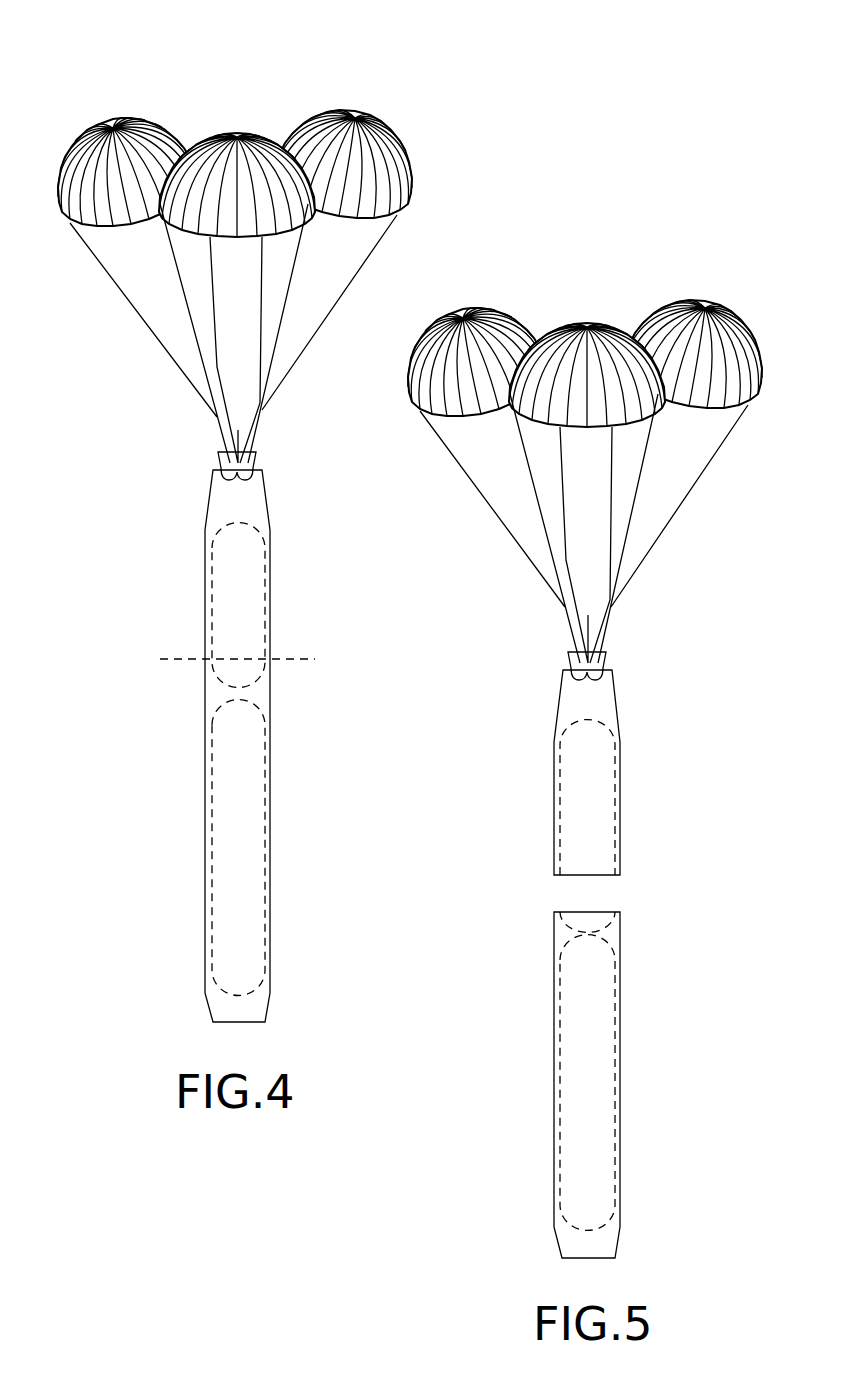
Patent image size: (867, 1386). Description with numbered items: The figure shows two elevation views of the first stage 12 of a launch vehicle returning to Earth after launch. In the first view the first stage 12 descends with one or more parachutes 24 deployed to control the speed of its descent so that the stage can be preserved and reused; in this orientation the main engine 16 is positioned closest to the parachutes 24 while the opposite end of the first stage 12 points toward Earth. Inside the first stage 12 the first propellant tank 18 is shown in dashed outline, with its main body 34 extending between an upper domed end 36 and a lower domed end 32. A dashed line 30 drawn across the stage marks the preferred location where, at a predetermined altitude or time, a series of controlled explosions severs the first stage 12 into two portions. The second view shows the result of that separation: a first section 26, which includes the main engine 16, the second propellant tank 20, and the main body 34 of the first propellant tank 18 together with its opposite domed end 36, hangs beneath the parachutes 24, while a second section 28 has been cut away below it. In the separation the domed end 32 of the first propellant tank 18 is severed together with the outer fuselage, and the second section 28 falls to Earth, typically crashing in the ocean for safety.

In FIG. 4, the parachute 24 is at (272, 92).
In FIG. 5, the parachute 24 is at (624, 274).
In FIG. 4, the main engine 16 is at (220, 453).
In FIG. 5, the main engine 16 is at (605, 672).
In FIG. 4, the first stage 12 is at (263, 486).
In FIG. 4, the opposite domed end 36 is at (225, 540).
In FIG. 4, the main body of the first propellant tank 34 is at (237, 618).
In FIG. 4, the dashed line 30 is at (172, 660).
In FIG. 4, the domed end of the first propellant tank 32 is at (237, 677).
In FIG. 4, the first propellant tank 18 is at (228, 882).
In FIG. 5, the first propellant tank 18 is at (588, 1108).
In FIG. 5, the second propellant tank 20 is at (592, 808).
In FIG. 5, the first section 26 is at (620, 867).
In FIG. 5, the second section 28 is at (620, 1233).